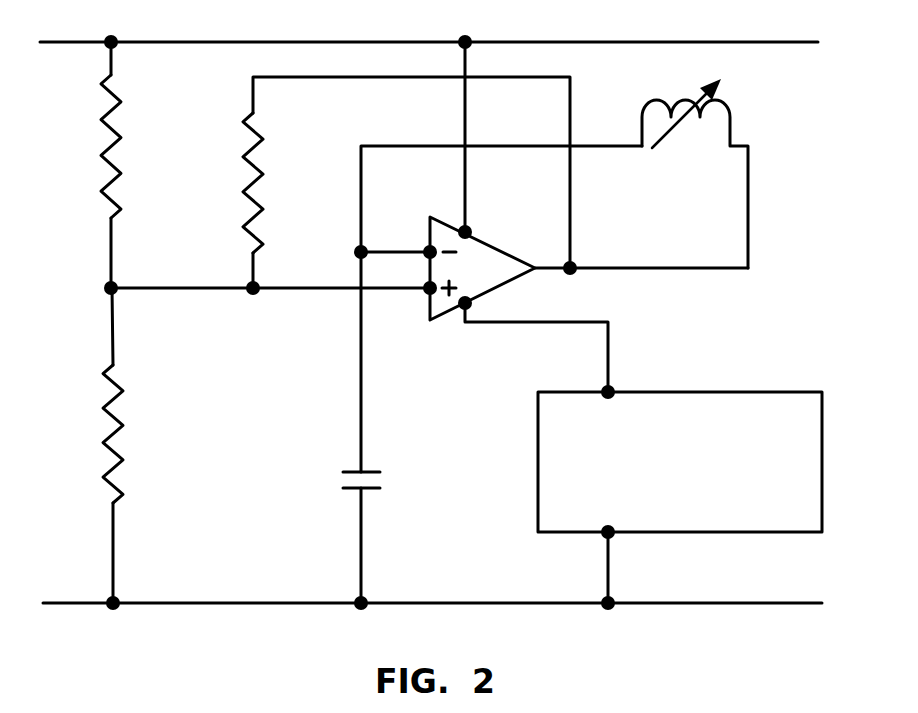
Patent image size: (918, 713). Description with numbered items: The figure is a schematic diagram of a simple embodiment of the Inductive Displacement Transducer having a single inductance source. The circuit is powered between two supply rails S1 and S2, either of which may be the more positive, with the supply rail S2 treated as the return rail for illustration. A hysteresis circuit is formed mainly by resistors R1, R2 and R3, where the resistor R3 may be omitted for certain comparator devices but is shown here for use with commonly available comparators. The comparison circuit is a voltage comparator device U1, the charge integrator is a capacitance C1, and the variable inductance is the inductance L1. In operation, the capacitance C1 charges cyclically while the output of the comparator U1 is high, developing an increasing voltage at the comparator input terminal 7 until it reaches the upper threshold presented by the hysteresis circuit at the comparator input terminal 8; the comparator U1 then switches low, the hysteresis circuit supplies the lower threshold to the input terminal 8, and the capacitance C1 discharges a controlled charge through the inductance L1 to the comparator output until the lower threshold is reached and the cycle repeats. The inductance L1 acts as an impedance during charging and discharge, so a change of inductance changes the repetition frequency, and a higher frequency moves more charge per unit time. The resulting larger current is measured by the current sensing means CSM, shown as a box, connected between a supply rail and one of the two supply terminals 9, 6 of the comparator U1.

The supply terminal 6 is at (456, 324).
The comparator input terminal 7 is at (420, 240).
The comparator input terminal 8 is at (422, 296).
The supply terminal 9 is at (474, 228).
The resistor R1 is at (136, 165).
The resistor R2 is at (138, 445).
The resistor R3 is at (406, 182).
The capacitance C1 is at (389, 427).
The variable inductance L1 is at (695, 173).
The voltage comparator device U1 is at (589, 268).
The supply rail S1 is at (454, 42).
The supply rail S2 is at (458, 603).
The current sensing means CSM is at (680, 497).